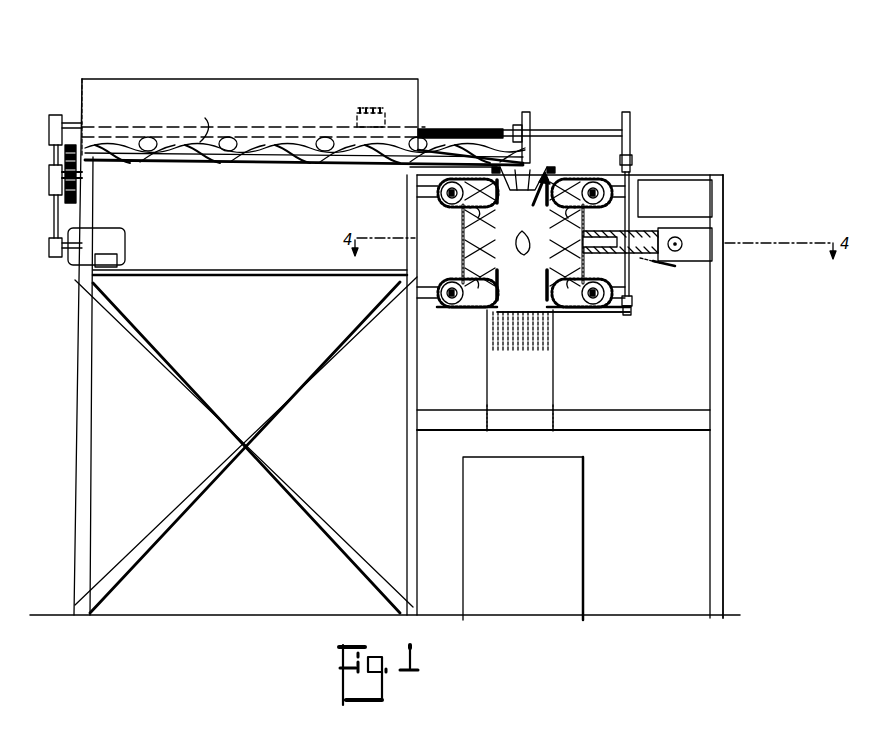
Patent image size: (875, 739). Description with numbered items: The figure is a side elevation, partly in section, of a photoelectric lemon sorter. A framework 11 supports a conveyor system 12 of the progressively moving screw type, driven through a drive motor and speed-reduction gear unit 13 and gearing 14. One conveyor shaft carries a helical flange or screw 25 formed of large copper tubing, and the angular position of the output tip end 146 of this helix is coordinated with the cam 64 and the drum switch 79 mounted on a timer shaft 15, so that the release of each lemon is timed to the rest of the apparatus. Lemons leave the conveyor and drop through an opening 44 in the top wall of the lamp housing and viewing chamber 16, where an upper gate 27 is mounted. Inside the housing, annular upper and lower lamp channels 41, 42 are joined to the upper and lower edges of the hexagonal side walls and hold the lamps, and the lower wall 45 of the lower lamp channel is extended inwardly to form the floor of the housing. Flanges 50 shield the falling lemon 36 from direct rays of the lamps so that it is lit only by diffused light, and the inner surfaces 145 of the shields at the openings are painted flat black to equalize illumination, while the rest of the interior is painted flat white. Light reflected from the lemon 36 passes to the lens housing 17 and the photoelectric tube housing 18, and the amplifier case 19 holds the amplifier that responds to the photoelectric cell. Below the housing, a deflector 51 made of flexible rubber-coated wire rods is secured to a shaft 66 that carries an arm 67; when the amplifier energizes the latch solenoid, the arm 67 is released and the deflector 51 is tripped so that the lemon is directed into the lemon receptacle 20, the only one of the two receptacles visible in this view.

The framework 11 is at (74, 415).
The conveyor system 12 is at (195, 165).
The drive motor and speed-reduction gear unit 13 is at (127, 238).
The gearing 14 is at (42, 178).
The timer shaft 15 is at (450, 130).
The lamp housing and viewing chamber 16 is at (462, 270).
The lens housing 17 is at (650, 270).
The photoelectric tube housing 18 is at (703, 246).
The amplifier case 19 is at (673, 188).
The lemon receptacle 20 is at (582, 508).
The helical flange or screw 25 is at (192, 123).
The upper gate 27 is at (537, 199).
The falling lemon 36 is at (523, 254).
The upper lamp channel 41 is at (447, 206).
The lower lamp channel 42 is at (448, 305).
The opening 44 is at (553, 162).
The lower wall 45 is at (472, 308).
The flanges 50 is at (470, 212).
The deflector 51 is at (520, 352).
The cam 64 is at (527, 112).
The shaft 66 is at (590, 313).
The arm 67 is at (631, 312).
The drum switch 79 is at (388, 123).
The inner surfaces 145 is at (497, 200).
The output tip end 146 is at (527, 178).